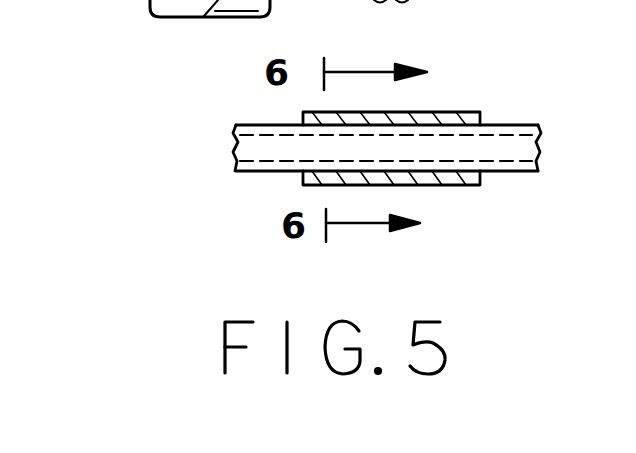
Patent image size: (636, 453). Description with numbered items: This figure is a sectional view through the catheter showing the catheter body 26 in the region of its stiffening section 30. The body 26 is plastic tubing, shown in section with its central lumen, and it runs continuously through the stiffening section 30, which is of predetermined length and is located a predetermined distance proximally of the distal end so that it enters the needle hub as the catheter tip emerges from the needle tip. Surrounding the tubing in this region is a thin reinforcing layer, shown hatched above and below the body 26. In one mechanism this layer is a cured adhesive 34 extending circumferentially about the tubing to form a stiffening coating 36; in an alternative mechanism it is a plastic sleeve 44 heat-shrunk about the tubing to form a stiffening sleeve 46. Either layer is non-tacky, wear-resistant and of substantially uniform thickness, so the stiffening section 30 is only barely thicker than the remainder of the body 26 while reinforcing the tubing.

The body section 26 is at (238, 172).
The stiffening section 30 is at (450, 202).
The cured adhesive 34 is at (451, 69).
The stiffening coating 36 is at (451, 69).
The plastic sleeve 44 is at (451, 69).
The stiffening sleeve 46 is at (448, 112).